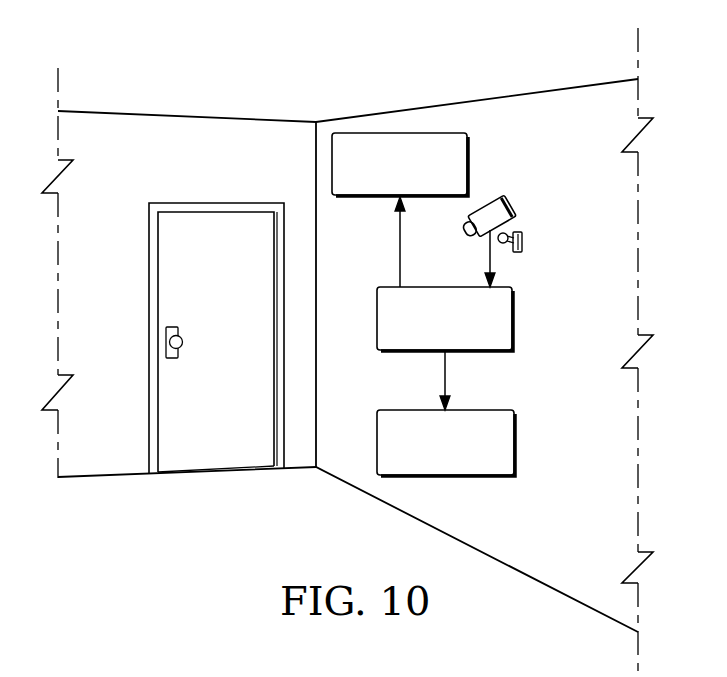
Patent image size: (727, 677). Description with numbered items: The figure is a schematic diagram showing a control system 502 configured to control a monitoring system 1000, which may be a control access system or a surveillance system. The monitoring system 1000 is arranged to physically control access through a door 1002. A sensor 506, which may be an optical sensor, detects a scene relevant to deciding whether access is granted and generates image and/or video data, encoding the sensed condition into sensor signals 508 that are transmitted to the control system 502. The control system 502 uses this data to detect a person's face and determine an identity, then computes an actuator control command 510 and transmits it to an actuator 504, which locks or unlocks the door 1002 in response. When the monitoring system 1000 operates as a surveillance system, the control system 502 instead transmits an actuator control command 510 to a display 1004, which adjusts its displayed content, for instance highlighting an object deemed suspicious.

The monitoring system 1000 is at (507, 62).
The door 1002 is at (257, 382).
The actuator 504 is at (470, 164).
The sensor 506 is at (516, 212).
The sensor signals 508 is at (488, 254).
The actuator control command 510 is at (398, 244).
The control system 502 is at (515, 320).
The display 1004 is at (516, 443).